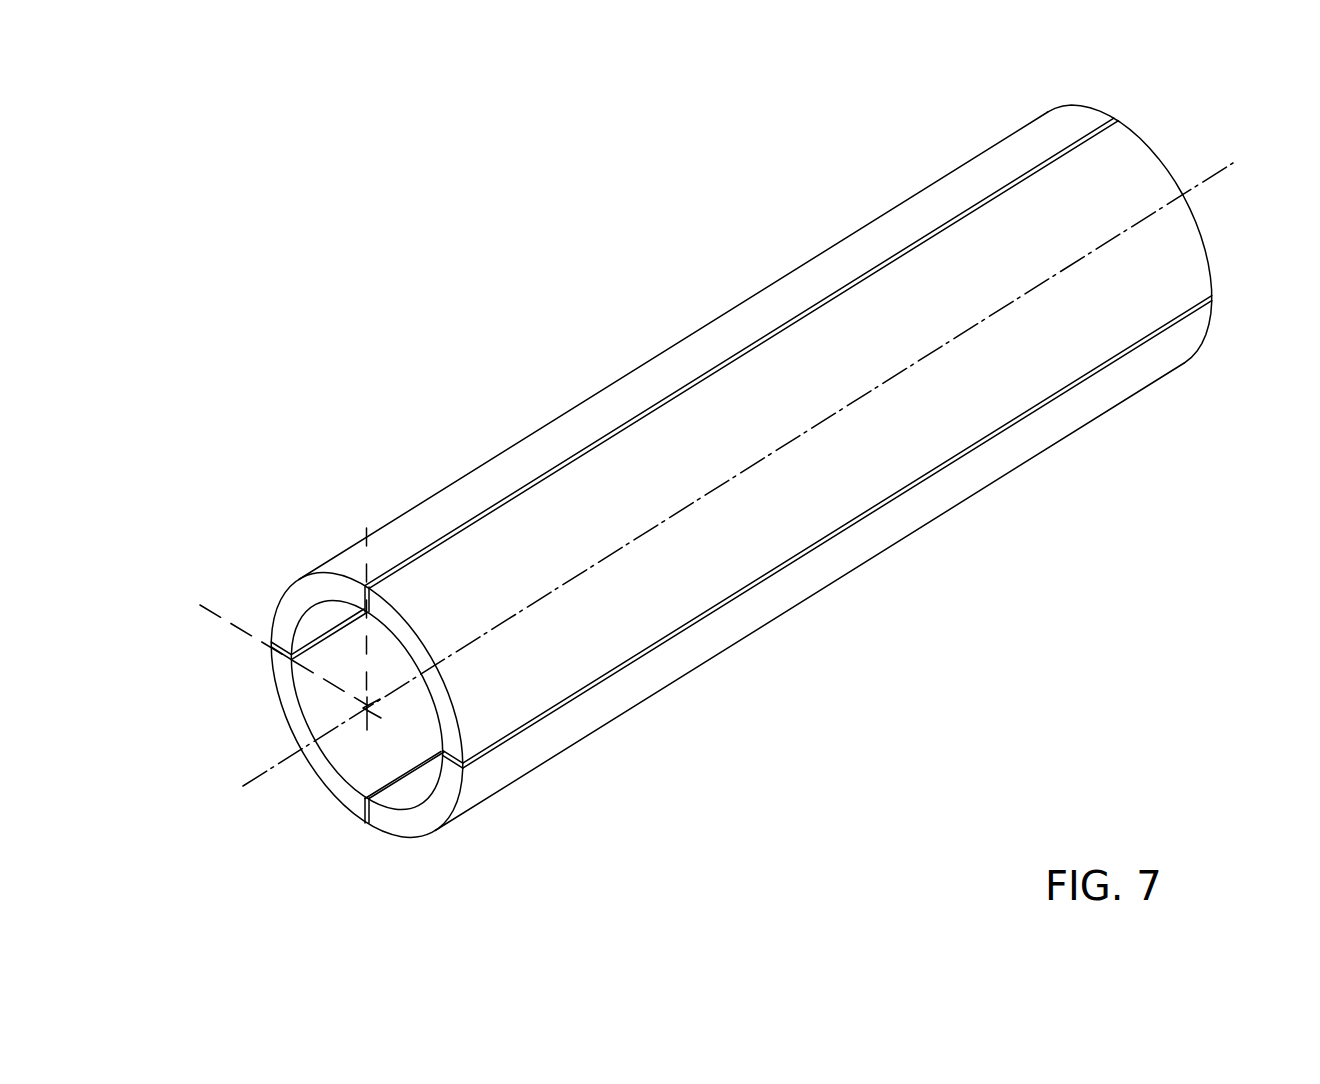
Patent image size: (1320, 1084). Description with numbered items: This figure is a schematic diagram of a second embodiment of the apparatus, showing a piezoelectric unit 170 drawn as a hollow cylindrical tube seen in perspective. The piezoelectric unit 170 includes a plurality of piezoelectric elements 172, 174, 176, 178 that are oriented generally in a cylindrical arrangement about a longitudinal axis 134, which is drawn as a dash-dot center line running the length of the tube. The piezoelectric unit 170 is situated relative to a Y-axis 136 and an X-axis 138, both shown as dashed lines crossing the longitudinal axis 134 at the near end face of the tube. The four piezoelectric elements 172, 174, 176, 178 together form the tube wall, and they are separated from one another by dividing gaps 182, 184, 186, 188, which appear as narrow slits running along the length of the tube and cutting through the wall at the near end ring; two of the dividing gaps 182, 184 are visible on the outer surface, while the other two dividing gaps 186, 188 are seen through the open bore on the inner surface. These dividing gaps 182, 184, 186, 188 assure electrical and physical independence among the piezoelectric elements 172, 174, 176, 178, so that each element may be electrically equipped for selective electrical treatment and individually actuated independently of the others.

The longitudinal axis 134 is at (247, 792).
The Y-axis 136 is at (371, 537).
The X-axis 138 is at (198, 607).
The piezoelectric unit 170 is at (949, 671).
The piezoelectric element 172 is at (1154, 152).
The piezoelectric element 174 is at (1203, 350).
The piezoelectric element 176 is at (282, 702).
The piezoelectric element 178 is at (300, 582).
The dividing gap 182 is at (1116, 121).
The dividing gap 184 is at (1212, 297).
The dividing gap 186 is at (372, 826).
The dividing gap 188 is at (273, 650).